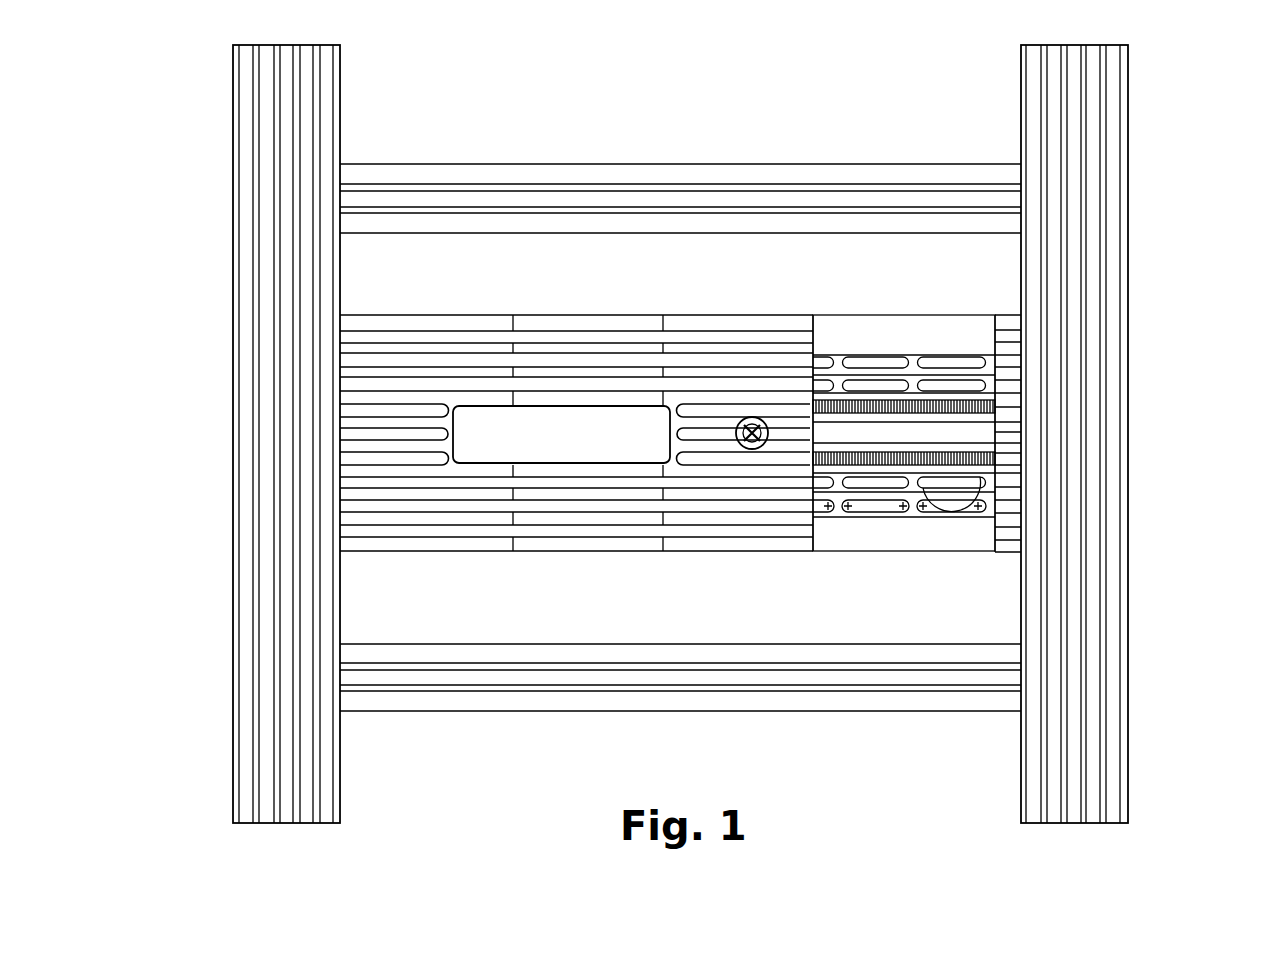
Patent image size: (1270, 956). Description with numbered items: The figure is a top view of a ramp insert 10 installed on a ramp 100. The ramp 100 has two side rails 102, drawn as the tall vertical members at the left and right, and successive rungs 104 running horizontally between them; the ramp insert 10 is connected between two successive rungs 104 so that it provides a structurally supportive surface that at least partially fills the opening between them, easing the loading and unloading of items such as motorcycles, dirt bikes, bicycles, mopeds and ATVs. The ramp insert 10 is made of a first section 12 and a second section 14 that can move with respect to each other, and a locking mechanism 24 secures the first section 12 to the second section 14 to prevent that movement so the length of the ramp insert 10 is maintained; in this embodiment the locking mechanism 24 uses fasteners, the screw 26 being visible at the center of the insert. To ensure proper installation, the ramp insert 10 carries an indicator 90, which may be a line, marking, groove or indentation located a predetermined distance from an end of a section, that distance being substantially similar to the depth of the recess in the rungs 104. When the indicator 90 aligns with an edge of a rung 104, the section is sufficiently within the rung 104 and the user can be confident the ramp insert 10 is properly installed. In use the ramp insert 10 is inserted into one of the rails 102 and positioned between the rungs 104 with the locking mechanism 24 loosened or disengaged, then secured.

The ramp insert 10 is at (681, 368).
The first section 12 is at (568, 327).
The second section 14 is at (890, 338).
The locking mechanism 24 is at (755, 412).
The screw 26 is at (768, 432).
The indicator 90 is at (1022, 503).
The ramp 100 is at (702, 434).
The rails 102 is at (257, 243).
The rungs 104 is at (680, 178).